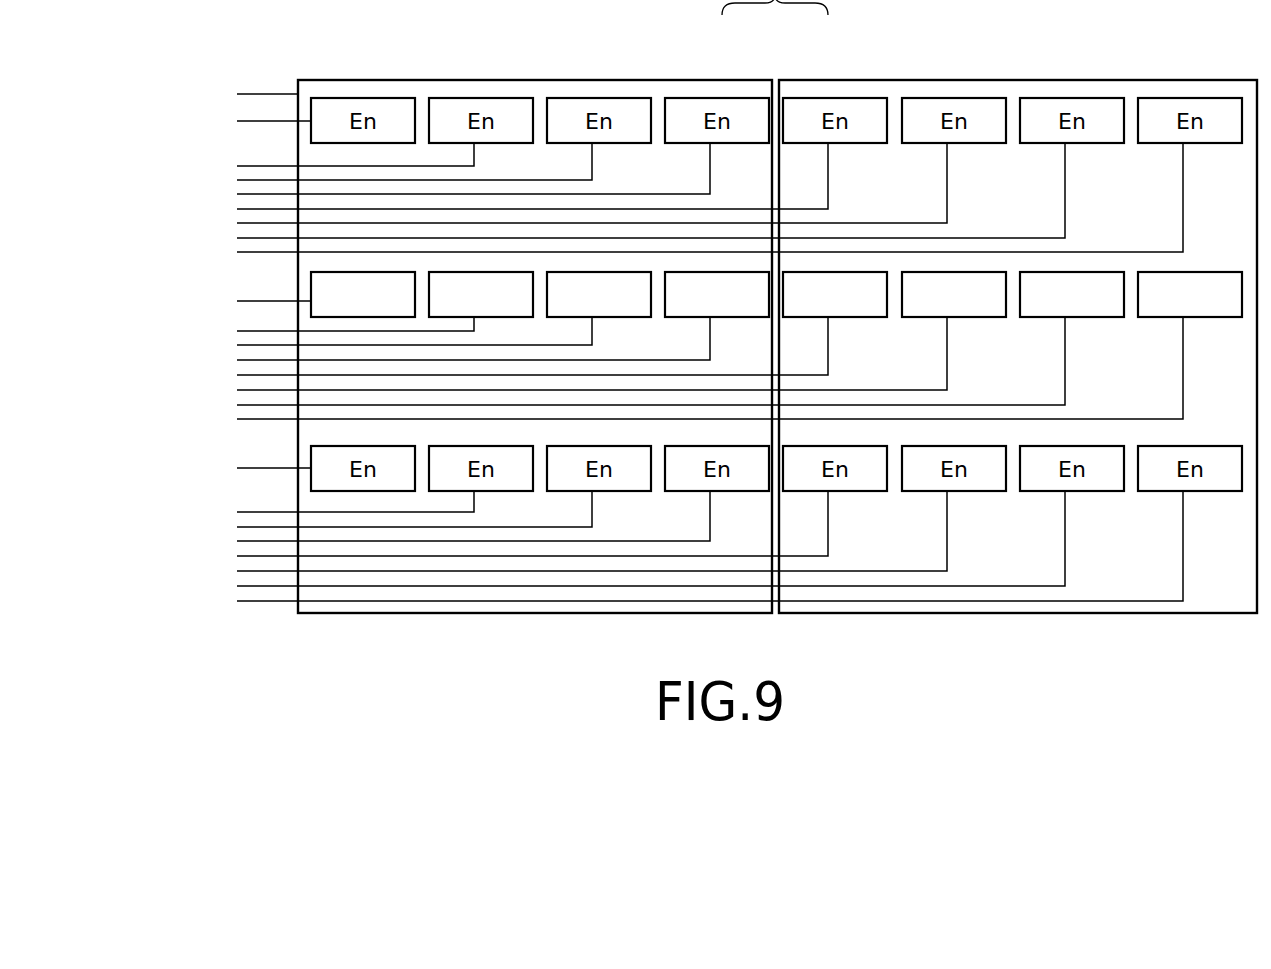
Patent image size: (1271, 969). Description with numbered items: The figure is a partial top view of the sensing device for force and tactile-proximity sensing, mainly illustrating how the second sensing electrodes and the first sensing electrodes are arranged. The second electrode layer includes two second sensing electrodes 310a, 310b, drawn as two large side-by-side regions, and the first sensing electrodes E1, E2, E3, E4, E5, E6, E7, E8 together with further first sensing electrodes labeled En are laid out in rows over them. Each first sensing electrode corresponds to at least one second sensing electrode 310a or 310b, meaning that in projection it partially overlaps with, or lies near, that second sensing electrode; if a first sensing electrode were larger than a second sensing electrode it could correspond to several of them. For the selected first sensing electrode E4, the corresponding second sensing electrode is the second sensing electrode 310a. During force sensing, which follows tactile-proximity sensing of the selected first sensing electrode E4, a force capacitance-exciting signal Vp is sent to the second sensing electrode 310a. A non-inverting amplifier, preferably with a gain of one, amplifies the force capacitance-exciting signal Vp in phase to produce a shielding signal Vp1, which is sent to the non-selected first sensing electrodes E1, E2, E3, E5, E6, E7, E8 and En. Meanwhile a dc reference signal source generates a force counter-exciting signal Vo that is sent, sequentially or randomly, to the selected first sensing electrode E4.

The second sensing electrode 310a is at (612, 88).
The second sensing electrode 310b is at (947, 88).
The first sensing electrode E1 is at (363, 294).
The first sensing electrode E2 is at (481, 294).
The first sensing electrode E3 is at (599, 294).
The selected first sensing electrode E4 is at (717, 294).
The first sensing electrode E5 is at (835, 294).
The first sensing electrode E6 is at (954, 294).
The first sensing electrode E7 is at (1072, 294).
The first sensing electrode E8 is at (1190, 294).
The force capacitance-exciting signal Vp is at (249, 93).
The shielding signal Vp1 is at (223, 345).
The force counter-exciting signal Vo is at (237, 360).